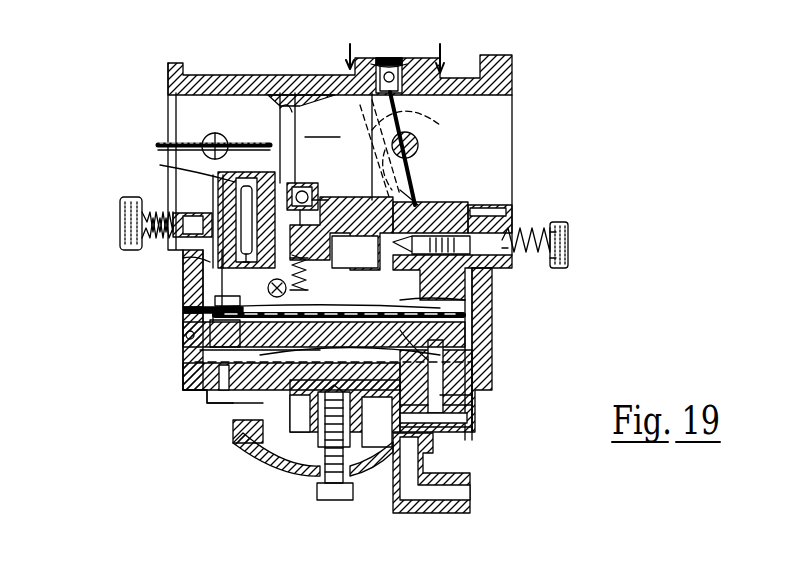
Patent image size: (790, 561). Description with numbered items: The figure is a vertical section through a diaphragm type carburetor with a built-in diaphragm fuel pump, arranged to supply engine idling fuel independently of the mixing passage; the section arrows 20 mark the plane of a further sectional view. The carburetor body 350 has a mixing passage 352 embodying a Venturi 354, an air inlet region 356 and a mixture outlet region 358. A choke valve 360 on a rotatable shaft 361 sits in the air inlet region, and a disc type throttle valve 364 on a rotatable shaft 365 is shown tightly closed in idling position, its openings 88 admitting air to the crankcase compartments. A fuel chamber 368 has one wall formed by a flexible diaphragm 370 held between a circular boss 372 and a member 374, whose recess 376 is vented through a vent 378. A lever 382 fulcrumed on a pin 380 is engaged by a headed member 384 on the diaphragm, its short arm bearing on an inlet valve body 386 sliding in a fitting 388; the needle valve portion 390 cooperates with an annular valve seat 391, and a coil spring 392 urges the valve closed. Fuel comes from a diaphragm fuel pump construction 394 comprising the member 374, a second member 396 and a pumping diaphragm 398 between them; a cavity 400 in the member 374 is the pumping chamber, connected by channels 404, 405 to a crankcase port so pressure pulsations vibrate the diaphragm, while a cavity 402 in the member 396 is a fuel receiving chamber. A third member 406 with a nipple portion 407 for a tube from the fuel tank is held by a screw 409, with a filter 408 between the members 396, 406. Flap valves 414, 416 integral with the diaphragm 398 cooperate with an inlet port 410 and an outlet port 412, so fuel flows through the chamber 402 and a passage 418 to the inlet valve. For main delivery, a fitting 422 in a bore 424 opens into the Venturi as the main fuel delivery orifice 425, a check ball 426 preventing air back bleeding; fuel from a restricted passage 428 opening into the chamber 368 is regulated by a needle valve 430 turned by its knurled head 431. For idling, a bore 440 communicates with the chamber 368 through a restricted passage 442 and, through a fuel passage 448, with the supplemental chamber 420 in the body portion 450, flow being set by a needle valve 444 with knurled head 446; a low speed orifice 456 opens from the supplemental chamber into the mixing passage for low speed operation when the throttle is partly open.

The section line 20 is at (396, 43).
The openings 88 is at (400, 125).
The carburetor body 350 is at (243, 74).
The mixing passage 352 is at (324, 128).
The Venturi 354 is at (282, 110).
The air inlet region 356 is at (190, 102).
The mixture outlet region 358 is at (512, 130).
The choke valve 360 is at (176, 143).
The rotatable shaft 361 is at (160, 150).
The throttle valve 364 is at (416, 166).
The rotatable shaft 365 is at (418, 140).
The fuel chamber 368 is at (492, 300).
The flexible diaphragm 370 is at (492, 316).
The circular boss 372 is at (220, 312).
The member 374 is at (186, 335).
The recess 376 is at (492, 332).
The vent 378 is at (200, 349).
The pin 380 is at (220, 292).
The lever 382 is at (288, 286).
The headed member 384 is at (310, 283).
The inlet valve body 386 is at (240, 215).
The fitting 388 is at (240, 195).
The needle valve portion 390 is at (262, 138).
The annular valve seat 391 is at (232, 196).
The coil spring 392 is at (331, 246).
The diaphragm fuel pump construction 394 is at (470, 386).
The second member 396 is at (202, 396).
The pumping diaphragm 398 is at (468, 410).
The cavity 400 is at (492, 356).
The cavity 402 is at (470, 426).
The channel 404 is at (492, 342).
The channel 405 is at (506, 216).
The third member 406 is at (262, 452).
The fitting 407 is at (440, 510).
The filter 408 is at (250, 434).
The screw 409 is at (318, 488).
The inlet port 410 is at (474, 382).
The outlet port 412 is at (196, 400).
The flap valve 414 is at (505, 400).
The flap valve 416 is at (222, 376).
The passage 418 is at (175, 166).
The supplemental chamber 420 is at (378, 62).
The fitting 422 is at (315, 206).
The bore 424 is at (205, 272).
The main fuel delivery orifice 425 is at (306, 187).
The check ball 426 is at (327, 193).
The restricted passage 428 is at (322, 228).
The needle valve 430 is at (190, 262).
The knurled head 431 is at (120, 212).
The bore 440 is at (430, 205).
The restricted passage 442 is at (418, 190).
The needle valve 444 is at (468, 232).
The knurled head 446 is at (568, 236).
The fuel passage 448 is at (412, 126).
The portion of the carburetor 450 is at (412, 62).
The low speed orifice 456 is at (347, 88).